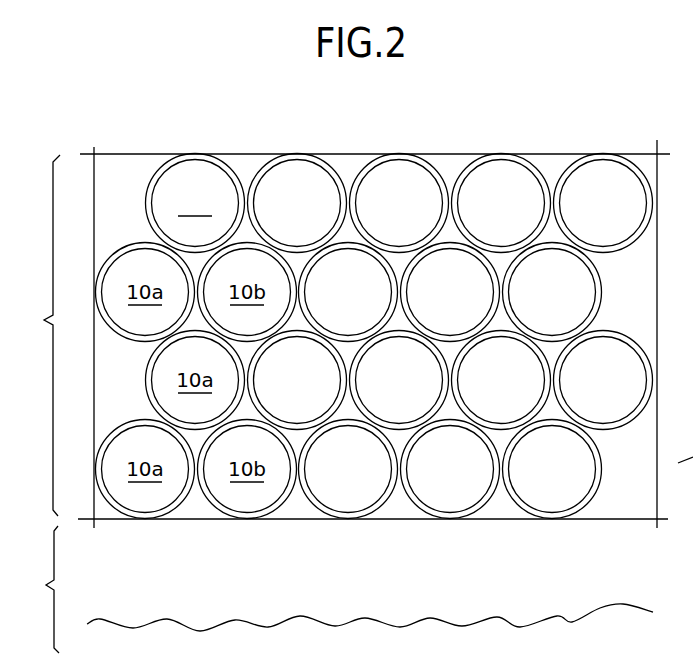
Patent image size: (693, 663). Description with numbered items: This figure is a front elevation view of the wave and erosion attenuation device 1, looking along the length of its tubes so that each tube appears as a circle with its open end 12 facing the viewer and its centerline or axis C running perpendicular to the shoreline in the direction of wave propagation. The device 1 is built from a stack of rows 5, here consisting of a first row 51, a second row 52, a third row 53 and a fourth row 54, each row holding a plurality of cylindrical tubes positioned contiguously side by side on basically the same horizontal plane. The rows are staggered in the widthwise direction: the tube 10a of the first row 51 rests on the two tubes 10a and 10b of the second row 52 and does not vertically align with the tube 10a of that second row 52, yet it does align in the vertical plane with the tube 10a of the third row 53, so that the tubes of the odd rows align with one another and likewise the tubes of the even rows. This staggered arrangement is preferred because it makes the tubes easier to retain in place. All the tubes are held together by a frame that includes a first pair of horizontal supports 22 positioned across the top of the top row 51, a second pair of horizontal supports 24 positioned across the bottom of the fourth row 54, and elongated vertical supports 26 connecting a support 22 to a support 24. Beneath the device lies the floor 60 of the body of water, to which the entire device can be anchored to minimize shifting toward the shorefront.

The wave and erosion attenuation device 1 is at (633, 122).
The rows 5 is at (43, 404).
The tube 10a is at (170, 339).
The tube 10b is at (247, 381).
The open end 12 is at (207, 171).
The first pair of horizontal supports 22 is at (148, 153).
The second pair of horizontal supports 24 is at (101, 520).
The vertical supports 26 is at (657, 270).
The first row 51 is at (147, 190).
The second row 52 is at (97, 275).
The third row 53 is at (146, 386).
The fourth row 54 is at (96, 466).
The floor 60 is at (527, 624).
The centerline or axis C is at (618, 211).